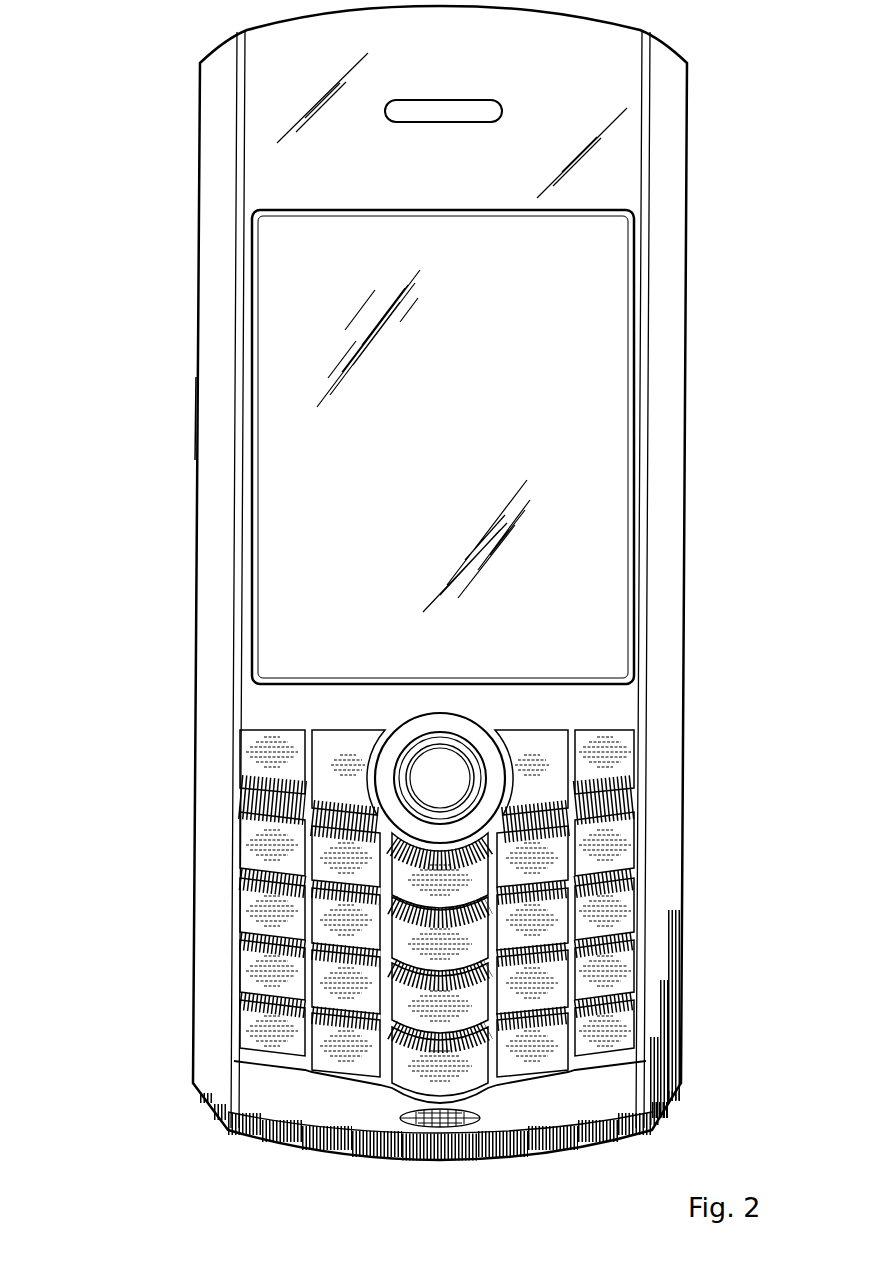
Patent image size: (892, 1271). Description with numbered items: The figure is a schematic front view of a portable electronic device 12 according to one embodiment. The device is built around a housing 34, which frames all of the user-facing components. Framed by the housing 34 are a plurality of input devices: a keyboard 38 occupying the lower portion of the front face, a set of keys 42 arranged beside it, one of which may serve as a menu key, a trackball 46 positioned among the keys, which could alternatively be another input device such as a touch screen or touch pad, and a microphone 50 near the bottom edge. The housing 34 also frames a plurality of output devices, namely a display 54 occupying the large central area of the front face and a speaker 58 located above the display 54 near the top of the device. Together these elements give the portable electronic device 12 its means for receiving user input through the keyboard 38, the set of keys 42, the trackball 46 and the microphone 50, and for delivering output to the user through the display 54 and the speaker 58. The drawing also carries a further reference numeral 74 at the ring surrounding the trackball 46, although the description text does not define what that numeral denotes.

The portable electronic device 12 is at (143, 1115).
The housing 34 is at (190, 950).
The speaker 58 is at (406, 115).
The display 54 is at (424, 426).
The trackball ring 74 is at (442, 772).
The trackball 46 is at (462, 752).
The set of keys 42 is at (334, 764).
The keyboard 38 is at (626, 961).
The microphone 50 is at (438, 1130).